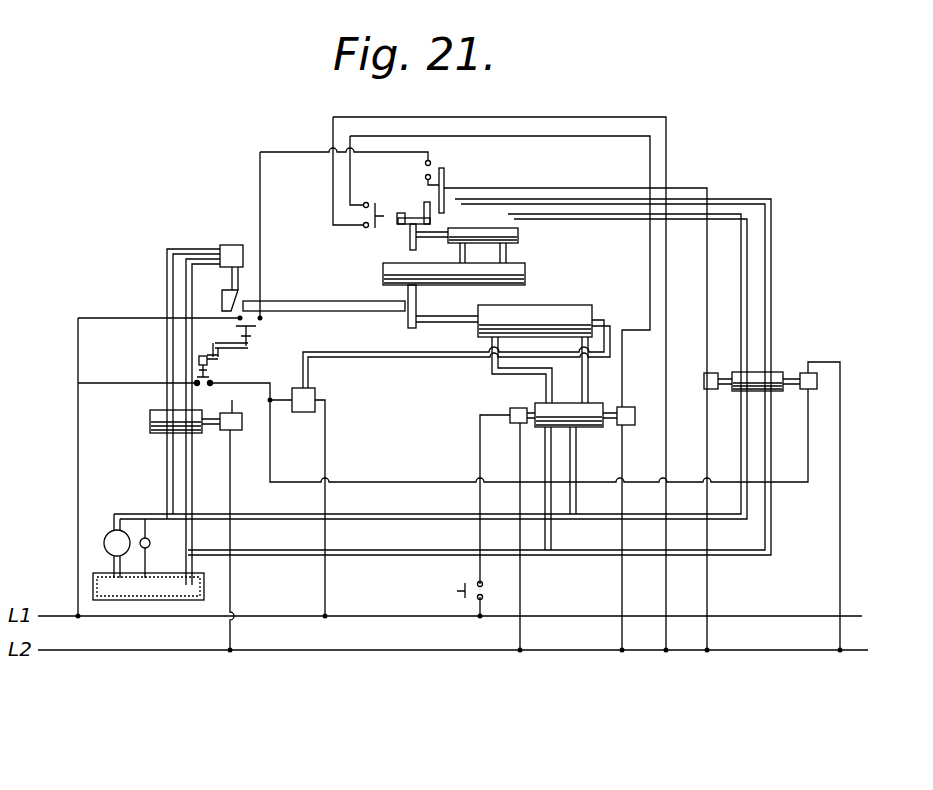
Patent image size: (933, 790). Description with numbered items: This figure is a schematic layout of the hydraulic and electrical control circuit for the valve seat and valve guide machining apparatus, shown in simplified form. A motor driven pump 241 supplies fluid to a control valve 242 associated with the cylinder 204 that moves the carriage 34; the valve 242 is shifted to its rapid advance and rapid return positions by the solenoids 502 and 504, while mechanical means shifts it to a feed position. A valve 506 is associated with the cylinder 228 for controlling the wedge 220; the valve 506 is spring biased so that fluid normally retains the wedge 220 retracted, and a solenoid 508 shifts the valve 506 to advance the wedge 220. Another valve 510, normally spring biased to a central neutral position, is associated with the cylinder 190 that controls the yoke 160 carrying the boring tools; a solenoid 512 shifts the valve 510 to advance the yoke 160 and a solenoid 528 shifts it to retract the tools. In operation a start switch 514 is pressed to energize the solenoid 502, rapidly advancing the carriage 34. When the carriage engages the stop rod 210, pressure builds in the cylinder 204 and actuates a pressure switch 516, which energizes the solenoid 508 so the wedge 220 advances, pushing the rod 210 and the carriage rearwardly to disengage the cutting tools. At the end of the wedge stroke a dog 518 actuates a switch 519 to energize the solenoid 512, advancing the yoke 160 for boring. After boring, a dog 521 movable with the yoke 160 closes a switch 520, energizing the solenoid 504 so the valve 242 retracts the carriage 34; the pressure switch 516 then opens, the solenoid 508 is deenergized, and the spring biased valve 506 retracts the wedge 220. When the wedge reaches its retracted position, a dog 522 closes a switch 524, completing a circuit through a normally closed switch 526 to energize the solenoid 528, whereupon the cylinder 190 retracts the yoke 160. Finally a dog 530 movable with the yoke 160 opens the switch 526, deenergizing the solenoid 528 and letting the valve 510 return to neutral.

The cylinder 228 is at (233, 245).
The wedge 220 is at (226, 298).
The stop rod 210 is at (288, 301).
The switch 524 is at (258, 327).
The dog 522 is at (248, 352).
The dog 518 is at (200, 357).
The switch 519 is at (212, 383).
The pressure switch 516 is at (318, 392).
The valve 506 is at (150, 430).
The solenoid 508 is at (242, 430).
The motor driven pump 241 is at (108, 532).
The dog 530 is at (424, 206).
The dog 521 is at (397, 220).
The switch 520 is at (372, 232).
The normally closed switch 526 is at (445, 173).
The yoke 160 is at (416, 249).
The cylinder 190 is at (518, 236).
The carriage 34 is at (512, 275).
The cylinder 204 is at (553, 305).
The solenoid 502 is at (497, 409).
The solenoid 504 is at (626, 409).
The control valve 242 is at (597, 430).
The valve 510 is at (776, 377).
The solenoid 528 is at (706, 394).
The solenoid 512 is at (820, 381).
The start switch 514 is at (468, 585).